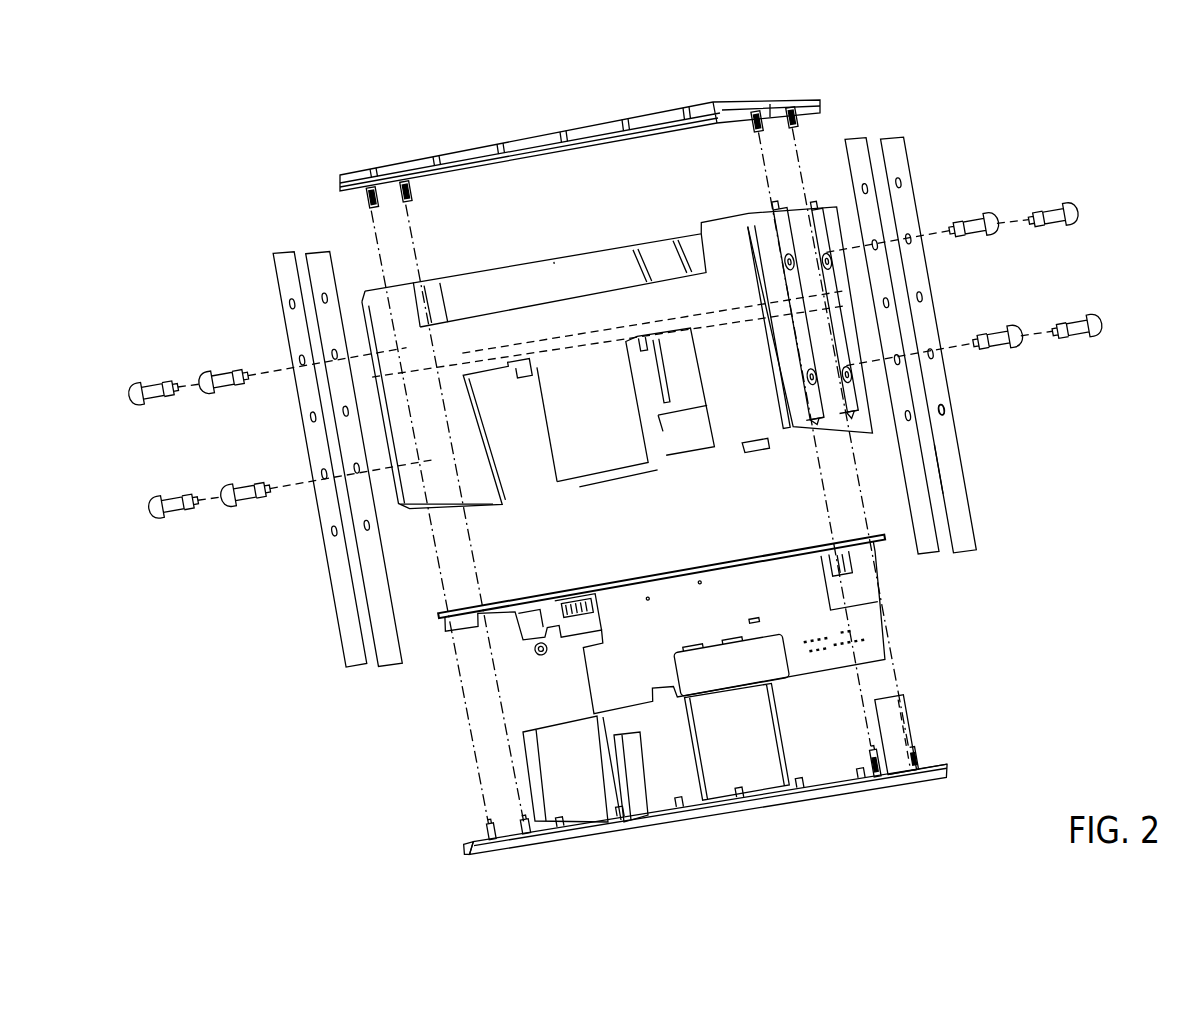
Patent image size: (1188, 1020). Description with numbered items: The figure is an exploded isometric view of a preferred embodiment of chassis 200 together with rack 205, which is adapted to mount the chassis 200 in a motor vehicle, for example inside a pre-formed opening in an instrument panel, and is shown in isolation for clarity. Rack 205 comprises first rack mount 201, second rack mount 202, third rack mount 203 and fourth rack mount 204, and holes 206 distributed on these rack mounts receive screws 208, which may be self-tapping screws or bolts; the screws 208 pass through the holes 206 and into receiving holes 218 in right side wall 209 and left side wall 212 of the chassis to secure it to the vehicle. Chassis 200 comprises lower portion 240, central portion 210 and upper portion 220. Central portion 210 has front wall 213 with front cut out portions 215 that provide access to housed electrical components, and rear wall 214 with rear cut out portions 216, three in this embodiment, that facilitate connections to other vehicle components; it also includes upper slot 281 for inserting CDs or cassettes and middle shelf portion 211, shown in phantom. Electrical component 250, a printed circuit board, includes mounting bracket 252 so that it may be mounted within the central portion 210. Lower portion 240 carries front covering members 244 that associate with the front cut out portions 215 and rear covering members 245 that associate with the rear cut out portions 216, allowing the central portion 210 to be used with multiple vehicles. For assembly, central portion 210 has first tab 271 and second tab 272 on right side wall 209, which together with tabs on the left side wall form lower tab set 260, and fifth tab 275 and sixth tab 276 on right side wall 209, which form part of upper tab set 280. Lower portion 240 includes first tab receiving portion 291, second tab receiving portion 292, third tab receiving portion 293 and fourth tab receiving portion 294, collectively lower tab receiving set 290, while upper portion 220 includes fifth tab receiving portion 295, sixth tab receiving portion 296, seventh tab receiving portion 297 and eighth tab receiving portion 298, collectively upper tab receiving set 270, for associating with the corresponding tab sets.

The chassis 200 is at (814, 86).
The first rack mount 201 is at (934, 554).
The second rack mount 202 is at (984, 540).
The third rack mount 203 is at (343, 653).
The fourth rack mount 204 is at (392, 667).
The rack 205 is at (978, 483).
The holes 206 is at (950, 416).
The screws 208 is at (1056, 210).
The right side wall 209 is at (853, 347).
The central portion 210 is at (541, 260).
The middle shelf portion 211 is at (468, 357).
The left side wall 212 is at (430, 522).
The front wall 213 is at (462, 468).
The rear wall 214 is at (683, 371).
The front cut out portions 215 is at (527, 441).
The rear cut out portions 216 is at (688, 456).
The receiving holes 218 is at (800, 262).
The upper portion 220 is at (523, 135).
The lower portion 240 is at (619, 840).
The front covering members 244 is at (584, 803).
The rear covering members 245 is at (630, 776).
The electrical component 250 is at (872, 634).
The mounting bracket 252 is at (723, 557).
The lower tab set 260 is at (836, 412).
The upper tab receiving set 270 is at (745, 110).
The first tab 271 is at (811, 420).
The second tab 272 is at (846, 420).
The fifth tab 275 is at (770, 226).
The sixth tab 276 is at (806, 222).
The upper tab set 280 is at (801, 238).
The upper slot 281 is at (592, 282).
The lower tab receiving set 290 is at (903, 778).
The first tab receiving portion 291 is at (868, 753).
The second tab receiving portion 292 is at (914, 747).
The third tab receiving portion 293 is at (517, 829).
The fourth tab receiving portion 294 is at (486, 833).
The fifth tab receiving portion 295 is at (752, 126).
The sixth tab receiving portion 296 is at (822, 108).
The seventh tab receiving portion 297 is at (410, 195).
The eighth tab receiving portion 298 is at (368, 196).